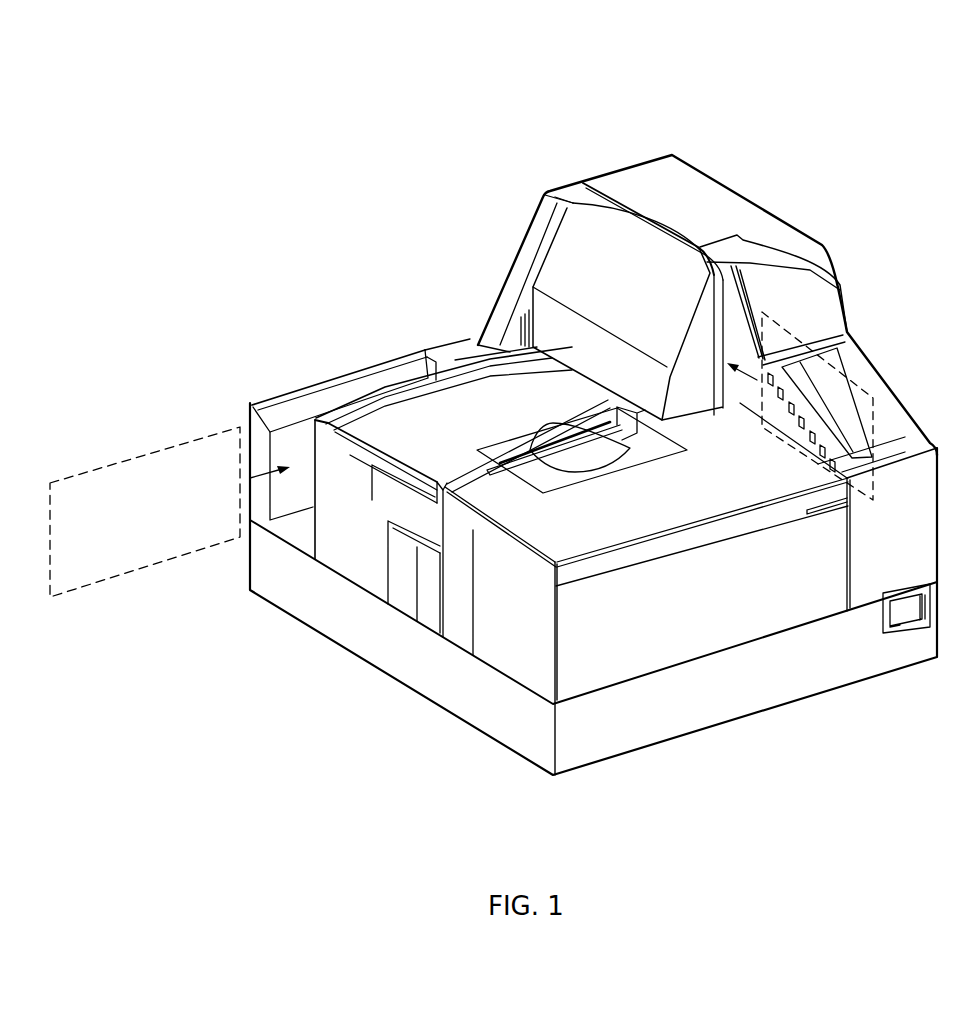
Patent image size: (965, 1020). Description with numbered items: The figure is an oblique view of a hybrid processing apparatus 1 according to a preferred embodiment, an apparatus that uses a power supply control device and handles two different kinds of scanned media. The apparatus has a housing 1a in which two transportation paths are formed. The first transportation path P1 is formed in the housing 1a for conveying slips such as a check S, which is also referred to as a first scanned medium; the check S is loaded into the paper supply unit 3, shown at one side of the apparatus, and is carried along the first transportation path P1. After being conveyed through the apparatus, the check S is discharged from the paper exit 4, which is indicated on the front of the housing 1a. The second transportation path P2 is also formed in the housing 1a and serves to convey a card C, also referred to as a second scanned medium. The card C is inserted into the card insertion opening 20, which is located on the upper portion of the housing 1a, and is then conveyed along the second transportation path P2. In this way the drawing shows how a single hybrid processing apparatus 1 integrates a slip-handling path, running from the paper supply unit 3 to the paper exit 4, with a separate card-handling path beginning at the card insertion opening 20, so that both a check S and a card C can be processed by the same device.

The hybrid processing apparatus 1 is at (502, 157).
The housing 1a is at (740, 212).
The paper supply unit 3 is at (357, 397).
The paper exit 4 is at (435, 587).
The card insertion opening 20 is at (725, 310).
The card C is at (853, 340).
The check S is at (147, 450).
The first transportation path P1 is at (503, 347).
The second transportation path P2 is at (617, 197).